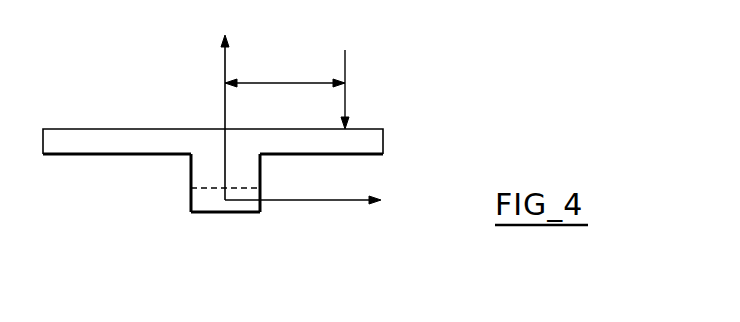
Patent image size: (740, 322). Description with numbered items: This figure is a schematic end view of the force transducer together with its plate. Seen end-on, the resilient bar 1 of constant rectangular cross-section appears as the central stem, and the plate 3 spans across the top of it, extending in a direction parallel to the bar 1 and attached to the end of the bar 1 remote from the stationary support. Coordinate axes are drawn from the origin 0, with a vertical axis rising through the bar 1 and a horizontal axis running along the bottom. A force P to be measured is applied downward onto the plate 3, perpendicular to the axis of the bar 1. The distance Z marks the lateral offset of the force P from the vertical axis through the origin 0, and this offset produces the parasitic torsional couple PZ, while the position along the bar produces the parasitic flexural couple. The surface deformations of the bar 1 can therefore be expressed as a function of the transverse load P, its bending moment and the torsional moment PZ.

The resilient bar 1 is at (190, 198).
The plate 3 is at (90, 142).
The origin of coordinate axes Oy / Oz 0 is at (278, 130).
The torsional lever arm Z is at (285, 74).
The force to be measured P is at (354, 86).